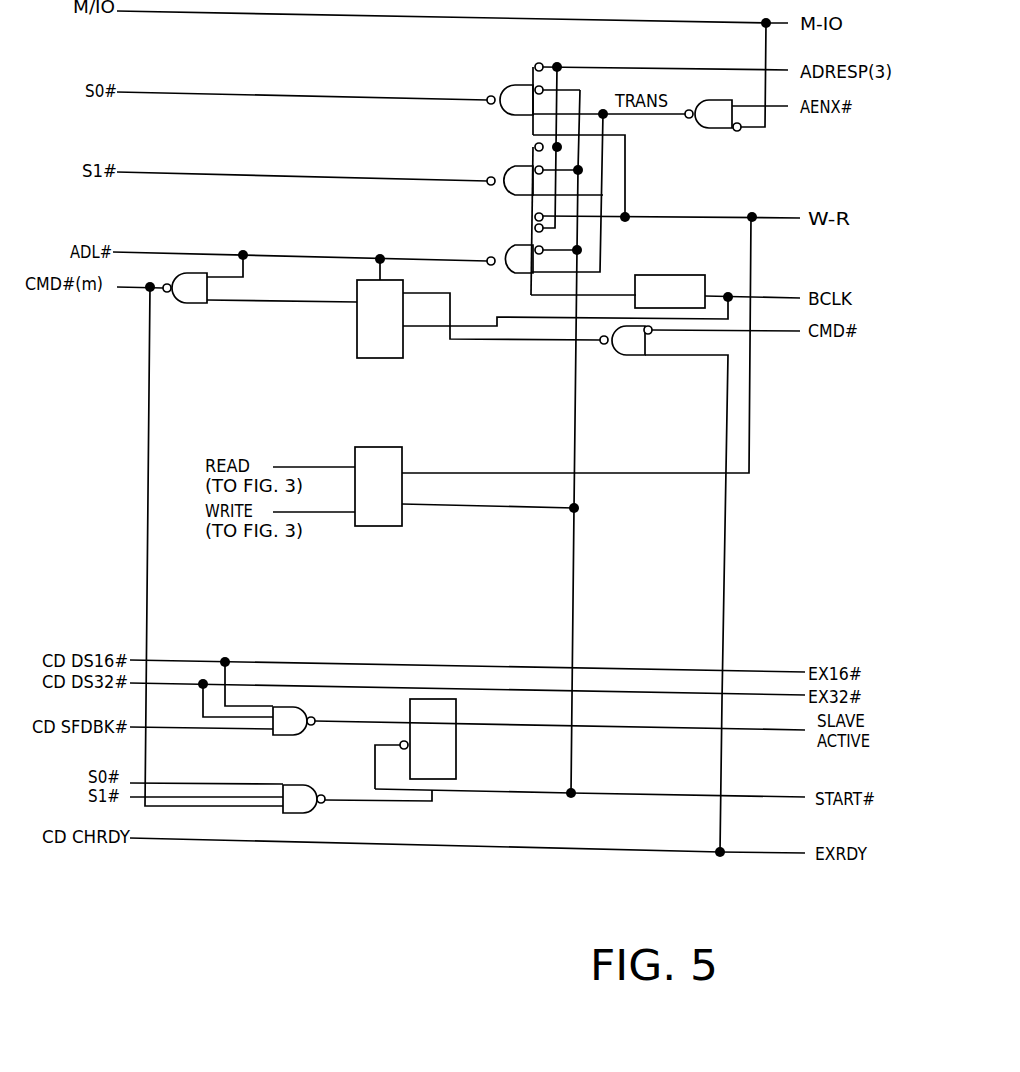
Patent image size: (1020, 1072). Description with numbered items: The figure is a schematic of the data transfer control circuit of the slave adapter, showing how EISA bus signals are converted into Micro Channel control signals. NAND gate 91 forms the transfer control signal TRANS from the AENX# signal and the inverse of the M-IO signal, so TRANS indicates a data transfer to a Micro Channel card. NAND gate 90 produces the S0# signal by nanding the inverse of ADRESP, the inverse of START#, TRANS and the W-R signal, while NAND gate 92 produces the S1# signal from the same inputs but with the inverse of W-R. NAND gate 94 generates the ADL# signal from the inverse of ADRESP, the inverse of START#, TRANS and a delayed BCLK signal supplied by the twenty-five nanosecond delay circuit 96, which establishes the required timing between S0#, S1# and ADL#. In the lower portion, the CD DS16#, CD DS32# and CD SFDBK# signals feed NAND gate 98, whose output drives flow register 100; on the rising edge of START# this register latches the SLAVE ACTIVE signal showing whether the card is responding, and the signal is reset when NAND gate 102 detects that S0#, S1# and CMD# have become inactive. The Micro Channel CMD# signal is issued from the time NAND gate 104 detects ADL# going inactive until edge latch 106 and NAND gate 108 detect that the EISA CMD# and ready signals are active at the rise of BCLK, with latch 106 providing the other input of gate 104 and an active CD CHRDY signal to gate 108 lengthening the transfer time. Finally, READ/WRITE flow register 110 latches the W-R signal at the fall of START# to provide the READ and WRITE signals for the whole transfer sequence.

The NAND gate 90 is at (515, 85).
The NAND gate 91 is at (720, 100).
The NAND gate 92 is at (513, 166).
The NAND gate 94 is at (510, 245).
The 25 nsec delay circuit 96 is at (688, 275).
The NAND gate 98 is at (293, 707).
The flow register 100 is at (456, 757).
The NAND gate 102 is at (300, 785).
The NAND gate 104 is at (190, 303).
The edge latch 106 is at (378, 358).
The NAND gate 108 is at (625, 355).
The READ/WRITE flow register 110 is at (373, 447).